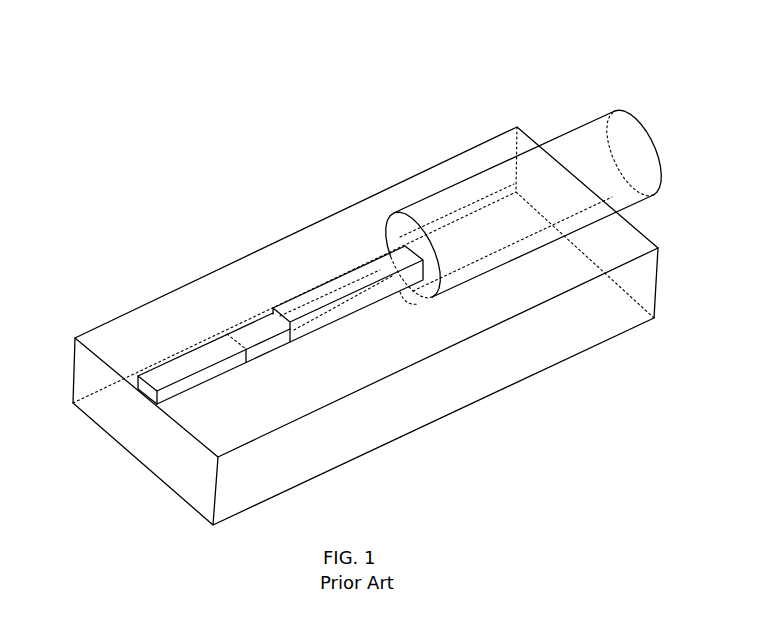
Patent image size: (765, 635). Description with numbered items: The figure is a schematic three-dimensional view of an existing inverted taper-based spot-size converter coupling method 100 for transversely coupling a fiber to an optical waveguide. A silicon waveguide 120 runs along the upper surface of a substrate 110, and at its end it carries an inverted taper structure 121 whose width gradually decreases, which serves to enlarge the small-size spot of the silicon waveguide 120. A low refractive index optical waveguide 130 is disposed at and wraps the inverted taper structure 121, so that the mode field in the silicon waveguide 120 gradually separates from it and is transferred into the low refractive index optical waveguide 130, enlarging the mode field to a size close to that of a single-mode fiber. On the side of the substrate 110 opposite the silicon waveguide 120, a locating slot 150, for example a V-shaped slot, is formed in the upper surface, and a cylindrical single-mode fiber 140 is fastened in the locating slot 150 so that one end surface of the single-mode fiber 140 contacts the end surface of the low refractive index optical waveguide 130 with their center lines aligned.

The coupling method 100 is at (81, 170).
The substrate 110 is at (141, 321).
The silicon waveguide 120 is at (198, 381).
The inverted taper structure 121 is at (261, 346).
The low refractive index optical waveguide 130 is at (375, 267).
The single-mode fiber 140 is at (577, 143).
The locating slot 150 is at (405, 308).